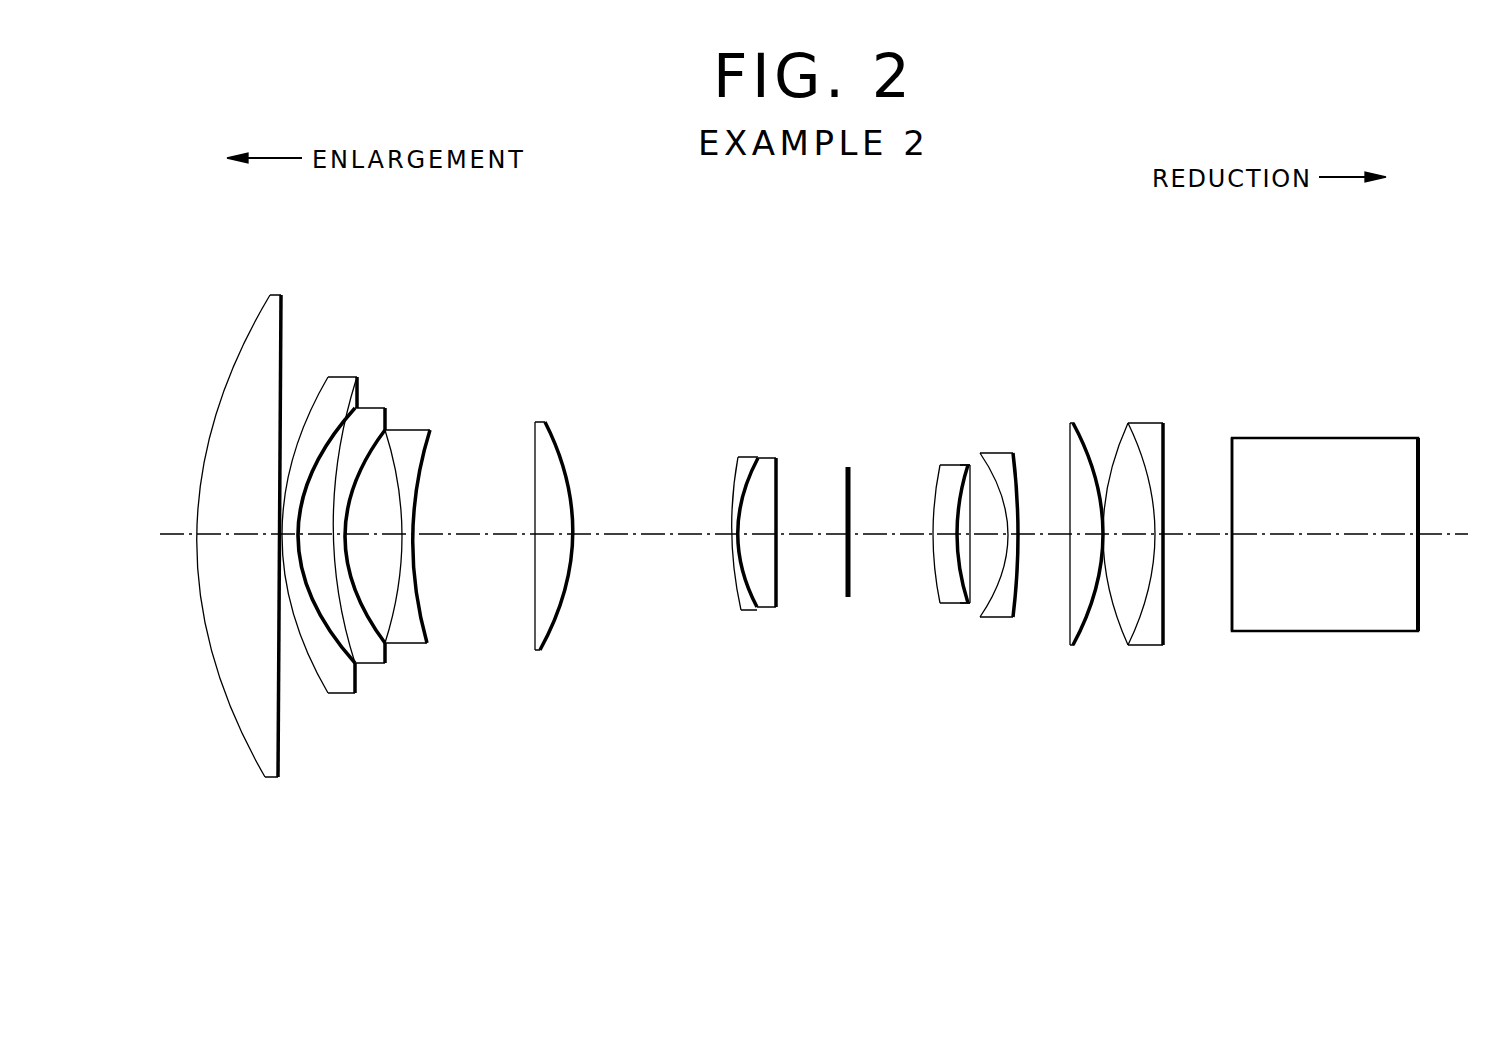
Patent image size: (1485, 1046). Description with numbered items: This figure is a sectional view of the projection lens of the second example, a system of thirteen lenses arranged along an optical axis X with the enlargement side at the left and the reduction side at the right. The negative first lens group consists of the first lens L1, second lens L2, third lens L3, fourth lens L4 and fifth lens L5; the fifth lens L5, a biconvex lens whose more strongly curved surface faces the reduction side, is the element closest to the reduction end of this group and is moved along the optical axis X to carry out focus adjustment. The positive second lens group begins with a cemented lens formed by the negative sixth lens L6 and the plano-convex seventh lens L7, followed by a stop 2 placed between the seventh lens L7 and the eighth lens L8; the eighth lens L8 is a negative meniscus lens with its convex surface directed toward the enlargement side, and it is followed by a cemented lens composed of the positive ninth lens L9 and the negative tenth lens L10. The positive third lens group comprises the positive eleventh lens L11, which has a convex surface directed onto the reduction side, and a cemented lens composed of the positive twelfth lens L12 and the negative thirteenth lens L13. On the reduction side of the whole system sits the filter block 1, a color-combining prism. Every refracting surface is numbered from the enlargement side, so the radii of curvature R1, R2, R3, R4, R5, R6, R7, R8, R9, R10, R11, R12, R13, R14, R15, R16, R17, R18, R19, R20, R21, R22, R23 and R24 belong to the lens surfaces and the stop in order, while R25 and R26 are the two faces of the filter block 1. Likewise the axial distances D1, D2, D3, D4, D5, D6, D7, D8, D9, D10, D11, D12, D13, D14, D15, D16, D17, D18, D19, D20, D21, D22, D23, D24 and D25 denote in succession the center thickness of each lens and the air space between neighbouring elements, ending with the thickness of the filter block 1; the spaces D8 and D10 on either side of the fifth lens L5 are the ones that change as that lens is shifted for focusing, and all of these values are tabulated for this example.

The filter block 1 is at (1328, 535).
The stop 2 is at (872, 504).
The optical axis X is at (1453, 528).
The first lens L1 is at (250, 509).
The second lens L2 is at (337, 492).
The third lens L3 is at (377, 503).
The fourth lens L4 is at (426, 514).
The fifth lens L5 is at (548, 510).
The sixth lens L6 is at (725, 501).
The seventh lens L7 is at (792, 512).
The eighth lens L8 is at (985, 500).
The ninth lens L9 is at (990, 477).
The tenth lens L10 is at (1022, 510).
The eleventh lens L11 is at (1088, 498).
The twelfth lens L12 is at (1163, 503).
The thirteenth lens L13 is at (1175, 515).
The lens surface R1 is at (243, 341).
The lens surface R2 is at (277, 402).
The lens surface R3 is at (318, 392).
The lens surface R4 is at (352, 410).
The lens surface R5 is at (334, 474).
The lens surface R6 is at (386, 436).
The lens surface R7 is at (399, 484).
The lens surface R8 is at (418, 473).
The lens surface R9 is at (535, 486).
The lens surface R10 is at (560, 453).
The lens surface R11 is at (732, 500).
The lens surface R12 is at (742, 458).
The lens surface R13 is at (778, 512).
The stop surface R14 is at (851, 508).
The lens surface R15 is at (938, 497).
The lens surface R16 is at (964, 508).
The lens surface R17 is at (970, 462).
The lens surface R18 is at (1010, 527).
The lens surface R19 is at (1015, 456).
The lens surface R20 is at (1070, 421).
The lens surface R21 is at (1082, 438).
The lens surface R22 is at (1125, 534).
The lens surface R23 is at (1135, 457).
The lens surface R24 is at (1165, 497).
The block surface R25 is at (1232, 631).
The block surface R26 is at (1418, 610).
The center thickness D1 is at (240, 538).
The air space D2 is at (275, 548).
The center thickness D3 is at (288, 530).
The air space D4 is at (305, 545).
The center thickness D5 is at (367, 665).
The air space D6 is at (377, 538).
The center thickness D7 is at (405, 545).
The air space D8 is at (453, 538).
The center thickness D9 is at (556, 540).
The air space D10 is at (647, 537).
The center thickness D11 is at (735, 552).
The center thickness D12 is at (766, 548).
The air space D13 is at (815, 537).
The air space D14 is at (882, 538).
The center thickness D15 is at (936, 548).
The air space D16 is at (962, 548).
The center thickness D17 is at (976, 548).
The center thickness D18 is at (1010, 548).
The air space D19 is at (1043, 538).
The center thickness D20 is at (1087, 548).
The air space D21 is at (1103, 548).
The center thickness D22 is at (1130, 548).
The center thickness D23 is at (1160, 548).
The air space D24 is at (1197, 538).
The block thickness D25 is at (1317, 536).